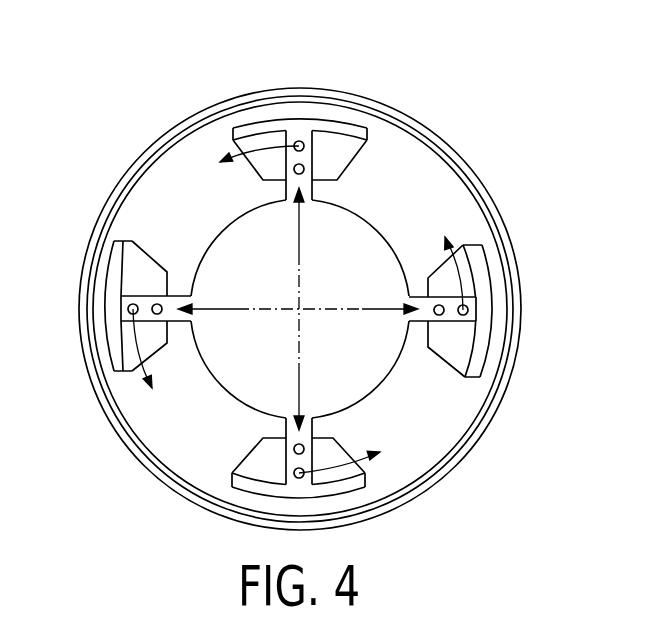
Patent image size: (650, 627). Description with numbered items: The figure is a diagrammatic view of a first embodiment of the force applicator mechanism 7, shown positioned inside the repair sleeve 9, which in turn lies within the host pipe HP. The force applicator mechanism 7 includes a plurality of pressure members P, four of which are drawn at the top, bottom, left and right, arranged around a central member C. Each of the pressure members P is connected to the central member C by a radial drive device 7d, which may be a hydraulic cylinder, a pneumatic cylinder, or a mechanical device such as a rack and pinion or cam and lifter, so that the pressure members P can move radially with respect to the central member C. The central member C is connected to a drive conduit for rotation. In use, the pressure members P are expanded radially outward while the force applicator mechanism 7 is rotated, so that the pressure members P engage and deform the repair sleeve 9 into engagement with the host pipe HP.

The host pipe HP is at (215, 105).
The repair sleeve 9 is at (320, 103).
The force applicator mechanism 7 is at (385, 235).
The pressure members P is at (345, 131).
The radial drive devices 7d is at (287, 423).
The central member C is at (382, 385).